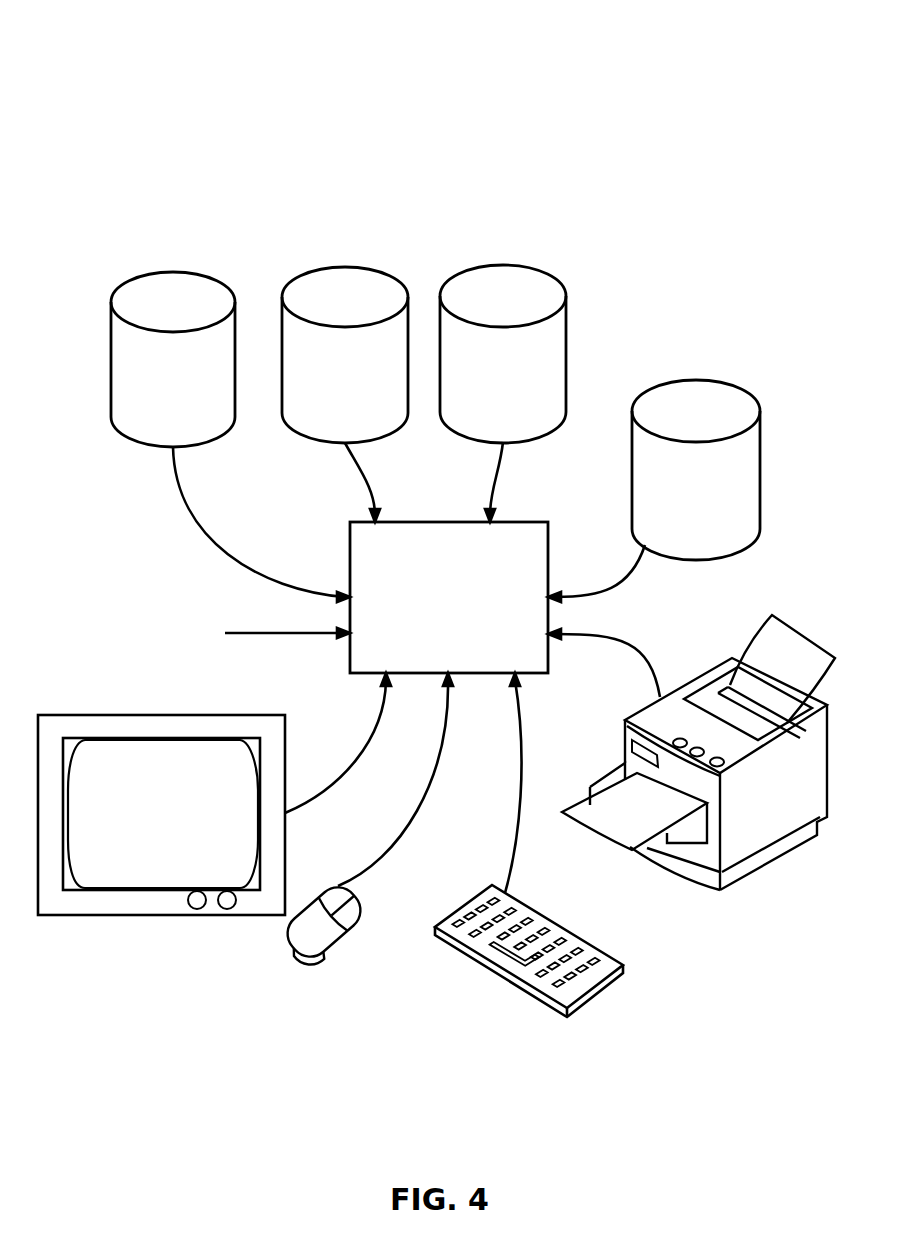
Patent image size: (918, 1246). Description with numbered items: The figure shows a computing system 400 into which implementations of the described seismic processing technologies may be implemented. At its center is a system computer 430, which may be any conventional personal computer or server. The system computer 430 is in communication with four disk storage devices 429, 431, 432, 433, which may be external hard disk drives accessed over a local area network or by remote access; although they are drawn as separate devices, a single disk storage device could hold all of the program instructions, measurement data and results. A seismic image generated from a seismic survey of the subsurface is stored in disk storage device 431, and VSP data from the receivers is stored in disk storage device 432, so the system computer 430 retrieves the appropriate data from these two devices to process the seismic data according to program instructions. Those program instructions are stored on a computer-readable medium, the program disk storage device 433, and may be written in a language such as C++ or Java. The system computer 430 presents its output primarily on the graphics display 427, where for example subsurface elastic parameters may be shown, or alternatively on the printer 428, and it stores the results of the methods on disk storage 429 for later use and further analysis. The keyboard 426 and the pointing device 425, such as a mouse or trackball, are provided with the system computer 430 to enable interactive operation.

The computing system 400 is at (138, 70).
The pointing device 425 is at (298, 960).
The keyboard 426 is at (587, 1008).
The graphics display 427 is at (163, 915).
The printer 428 is at (738, 880).
The disk storage device 429 is at (696, 380).
The system computer 430 is at (528, 522).
The disk storage device 431 is at (548, 265).
The disk storage device 432 is at (393, 268).
The program disk storage device 433 is at (210, 272).